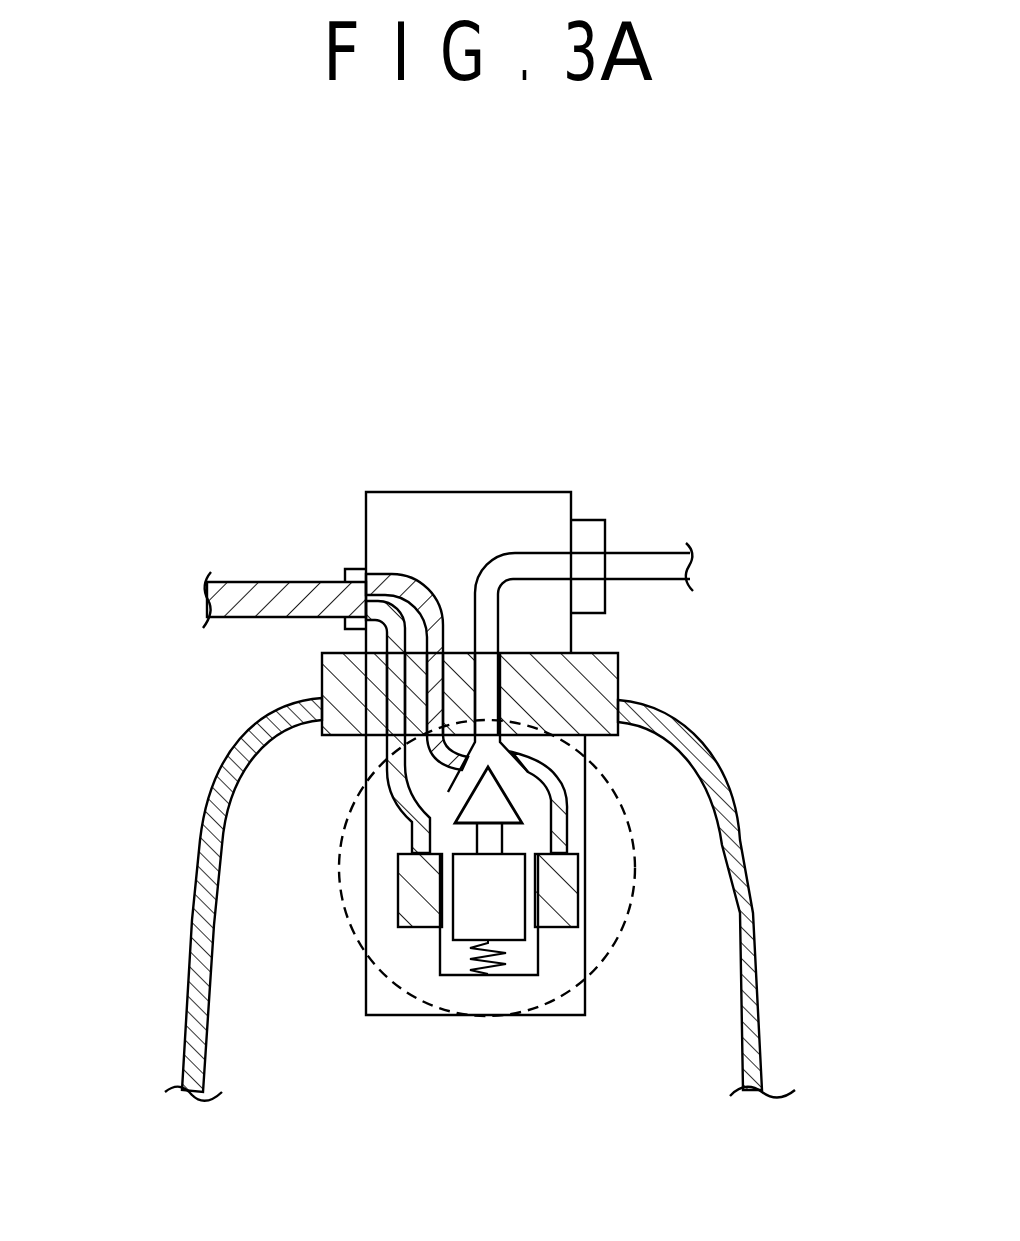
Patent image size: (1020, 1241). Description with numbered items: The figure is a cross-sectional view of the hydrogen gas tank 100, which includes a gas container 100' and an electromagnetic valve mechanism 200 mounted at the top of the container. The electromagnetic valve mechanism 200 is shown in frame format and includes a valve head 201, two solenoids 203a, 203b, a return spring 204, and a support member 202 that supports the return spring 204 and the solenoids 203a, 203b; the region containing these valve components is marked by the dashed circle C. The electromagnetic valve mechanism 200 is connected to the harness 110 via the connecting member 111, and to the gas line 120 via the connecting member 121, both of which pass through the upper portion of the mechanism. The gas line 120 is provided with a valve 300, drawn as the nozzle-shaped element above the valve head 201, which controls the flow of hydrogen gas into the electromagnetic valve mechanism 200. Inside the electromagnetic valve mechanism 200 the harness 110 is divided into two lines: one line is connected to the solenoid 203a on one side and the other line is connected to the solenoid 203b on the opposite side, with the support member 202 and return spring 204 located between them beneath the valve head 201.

The hydrogen gas tank 100 is at (348, 695).
The gas container 100' is at (423, 899).
The harness 110 is at (277, 580).
The connecting member 111 is at (356, 569).
The gas line 120 is at (655, 550).
The connecting member 121 is at (587, 520).
The valve 300 is at (503, 747).
The valve head 201 is at (503, 839).
The valve region C is at (637, 845).
The electromagnetic valve mechanism 200 is at (578, 910).
The support member 202 is at (510, 975).
The solenoid 203a is at (420, 928).
The solenoid 203b is at (557, 928).
The return spring 204 is at (488, 966).